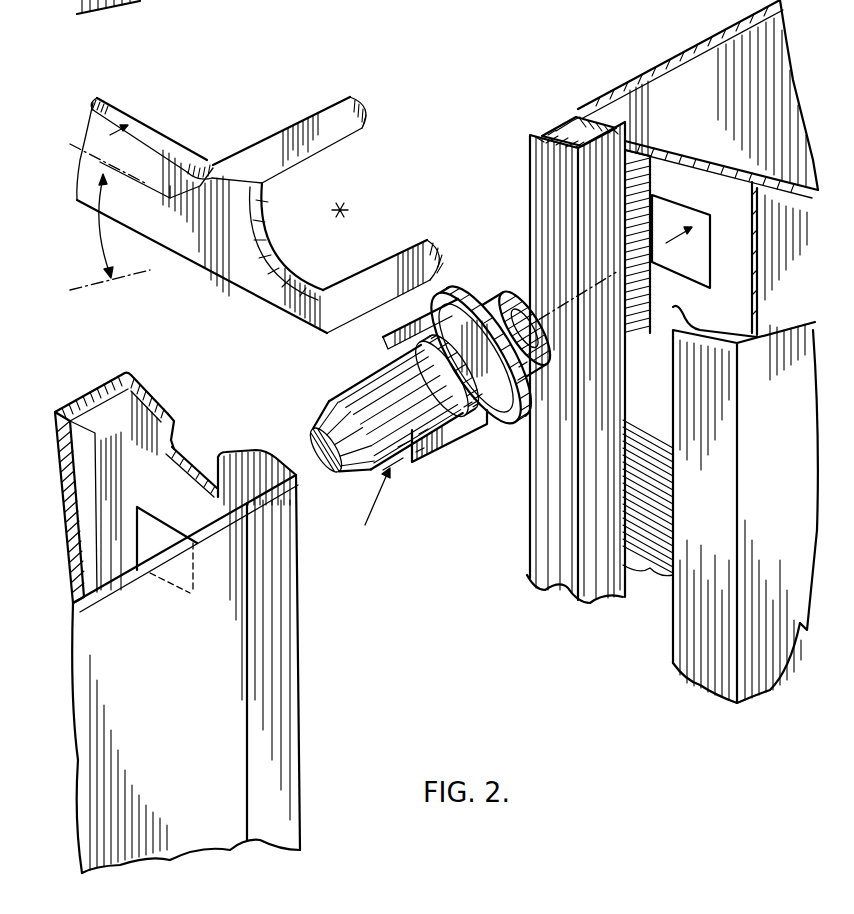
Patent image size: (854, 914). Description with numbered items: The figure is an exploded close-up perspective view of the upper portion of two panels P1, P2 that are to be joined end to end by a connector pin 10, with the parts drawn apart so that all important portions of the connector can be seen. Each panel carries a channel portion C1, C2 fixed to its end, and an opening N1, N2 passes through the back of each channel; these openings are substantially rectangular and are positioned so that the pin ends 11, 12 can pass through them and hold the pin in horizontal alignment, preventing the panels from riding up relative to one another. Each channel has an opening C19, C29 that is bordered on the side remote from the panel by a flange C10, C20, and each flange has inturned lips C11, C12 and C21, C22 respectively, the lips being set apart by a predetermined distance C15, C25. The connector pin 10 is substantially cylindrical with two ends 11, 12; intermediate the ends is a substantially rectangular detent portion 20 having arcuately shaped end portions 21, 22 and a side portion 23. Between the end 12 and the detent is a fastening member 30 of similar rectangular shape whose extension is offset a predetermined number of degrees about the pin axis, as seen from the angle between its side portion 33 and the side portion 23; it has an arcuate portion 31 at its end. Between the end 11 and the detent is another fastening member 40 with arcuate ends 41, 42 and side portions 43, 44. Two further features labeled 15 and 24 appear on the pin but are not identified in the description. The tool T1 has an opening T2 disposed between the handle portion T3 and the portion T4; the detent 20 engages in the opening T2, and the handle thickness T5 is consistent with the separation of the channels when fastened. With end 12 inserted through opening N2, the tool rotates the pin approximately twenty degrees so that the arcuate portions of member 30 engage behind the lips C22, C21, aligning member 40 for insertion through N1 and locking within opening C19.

The tool T1 is at (183, 152).
The opening of tool T2 is at (345, 205).
The handle portion T3 is at (97, 97).
The tool portion T4 is at (383, 286).
The predetermined thickness T5 is at (146, 111).
The connector pin 10 is at (368, 514).
The pin end 11 is at (323, 450).
The pin end 12 is at (550, 330).
The pin shoulder 15 is at (383, 470).
The detent portion 20 is at (468, 405).
The end portion of detent 21 is at (522, 378).
The end portion of detent 22 is at (402, 445).
The side portion of detent 23 is at (437, 412).
The hinge leaf plate 24 is at (410, 335).
The fastening member 30 is at (447, 290).
The arcuate portion 31 is at (483, 298).
The side portion 33 is at (523, 365).
The fastening member 40 is at (423, 432).
The arcuate end 41 is at (478, 398).
The arcuate end 42 is at (360, 380).
The side portion 43 is at (420, 450).
The side portion 44 is at (390, 340).
The channel portion C1 is at (267, 642).
The channel portion C2 is at (745, 643).
The flange C10 is at (150, 390).
The inturned lip C11 is at (167, 408).
The inturned lip C12 is at (230, 455).
The predetermined distance C15 is at (214, 470).
The channel opening C19 is at (103, 395).
The flange C20 is at (545, 148).
The inturned lip C21 is at (600, 176).
The inturned lip C22 is at (682, 312).
The predetermined distance C25 is at (676, 401).
The channel opening C29 is at (560, 130).
The opening N1 is at (150, 523).
The opening N2 is at (668, 213).
The panel P1 is at (125, 578).
The panel P2 is at (647, 78).